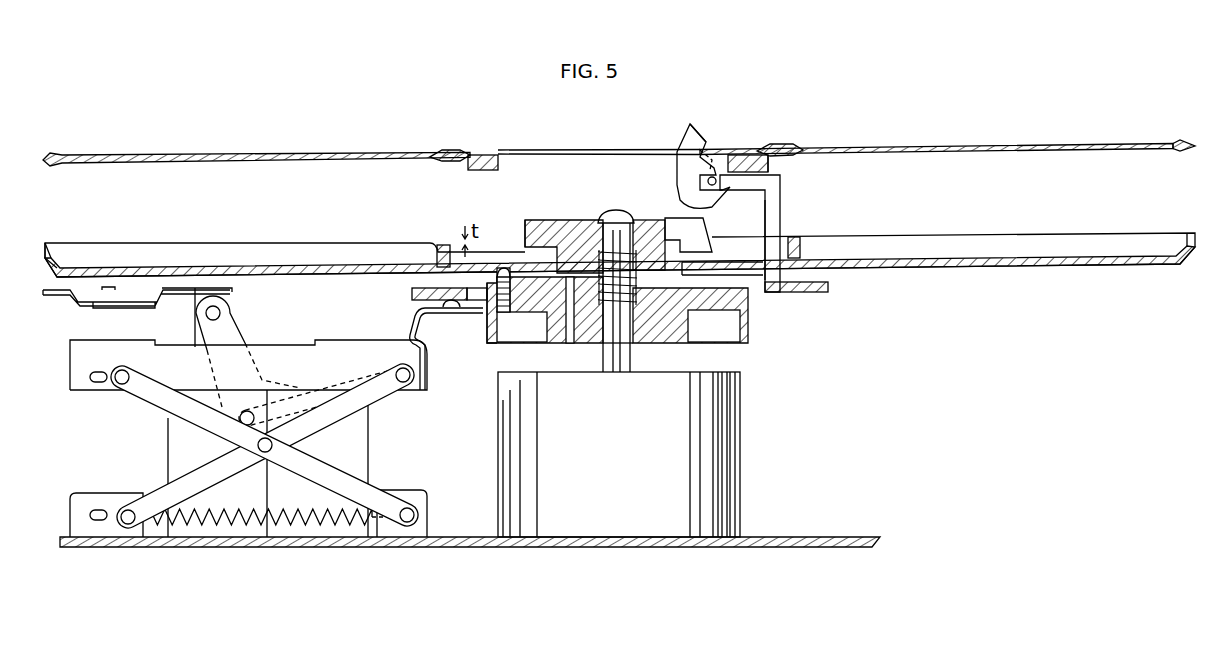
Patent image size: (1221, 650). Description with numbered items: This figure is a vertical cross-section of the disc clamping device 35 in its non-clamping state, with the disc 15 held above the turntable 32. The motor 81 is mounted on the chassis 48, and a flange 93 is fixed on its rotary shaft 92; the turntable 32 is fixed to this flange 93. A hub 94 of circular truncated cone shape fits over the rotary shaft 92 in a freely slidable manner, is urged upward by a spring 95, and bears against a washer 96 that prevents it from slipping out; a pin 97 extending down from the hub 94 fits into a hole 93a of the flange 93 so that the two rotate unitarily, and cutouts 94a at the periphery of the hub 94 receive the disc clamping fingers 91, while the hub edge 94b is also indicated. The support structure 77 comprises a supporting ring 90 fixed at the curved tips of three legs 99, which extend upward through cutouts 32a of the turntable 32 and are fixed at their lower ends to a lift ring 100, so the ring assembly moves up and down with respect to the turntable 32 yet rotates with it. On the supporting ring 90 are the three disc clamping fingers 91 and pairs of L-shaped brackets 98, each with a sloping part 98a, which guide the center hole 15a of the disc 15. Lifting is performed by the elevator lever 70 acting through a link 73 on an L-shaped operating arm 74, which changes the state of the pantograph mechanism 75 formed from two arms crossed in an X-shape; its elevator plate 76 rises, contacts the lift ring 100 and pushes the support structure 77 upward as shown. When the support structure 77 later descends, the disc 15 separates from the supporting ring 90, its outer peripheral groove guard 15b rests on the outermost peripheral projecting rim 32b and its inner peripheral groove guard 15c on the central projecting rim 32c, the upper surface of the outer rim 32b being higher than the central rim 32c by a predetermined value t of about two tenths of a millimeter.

The disc 15 is at (978, 146).
The center hole 15a is at (535, 150).
The outer peripheral groove guard 15b is at (1188, 142).
The inner peripheral groove guard 15c is at (448, 149).
The turntable 32 is at (943, 265).
The cutouts 32a is at (757, 275).
The outermost peripheral projecting rim 32b is at (62, 247).
The central projecting rim 32c is at (436, 250).
The disc clamping device 35 is at (668, 172).
The chassis 48 is at (440, 547).
The elevator lever 70 is at (62, 298).
The link 73 is at (178, 298).
The L-shaped operating arm 74 is at (237, 328).
The pantograph mechanism 75 is at (130, 440).
The elevator plate 76 is at (438, 313).
The support structure 77 is at (782, 196).
The motor 81 is at (742, 428).
The supporting ring 90 is at (770, 166).
The disc clamping fingers 91 is at (690, 195).
The rotary shaft 92 is at (614, 345).
The flange 93 is at (668, 345).
The hole 93a is at (560, 345).
The hub 94 is at (565, 222).
The cutouts 94a is at (703, 228).
The block edge 94b is at (525, 232).
The spring 95 is at (640, 290).
The washer 96 is at (606, 220).
The pin 97 is at (570, 302).
The L-shaped brackets 98 is at (688, 140).
The sloping part 98a is at (700, 128).
The legs 99 is at (781, 214).
The lift ring 100 is at (830, 290).